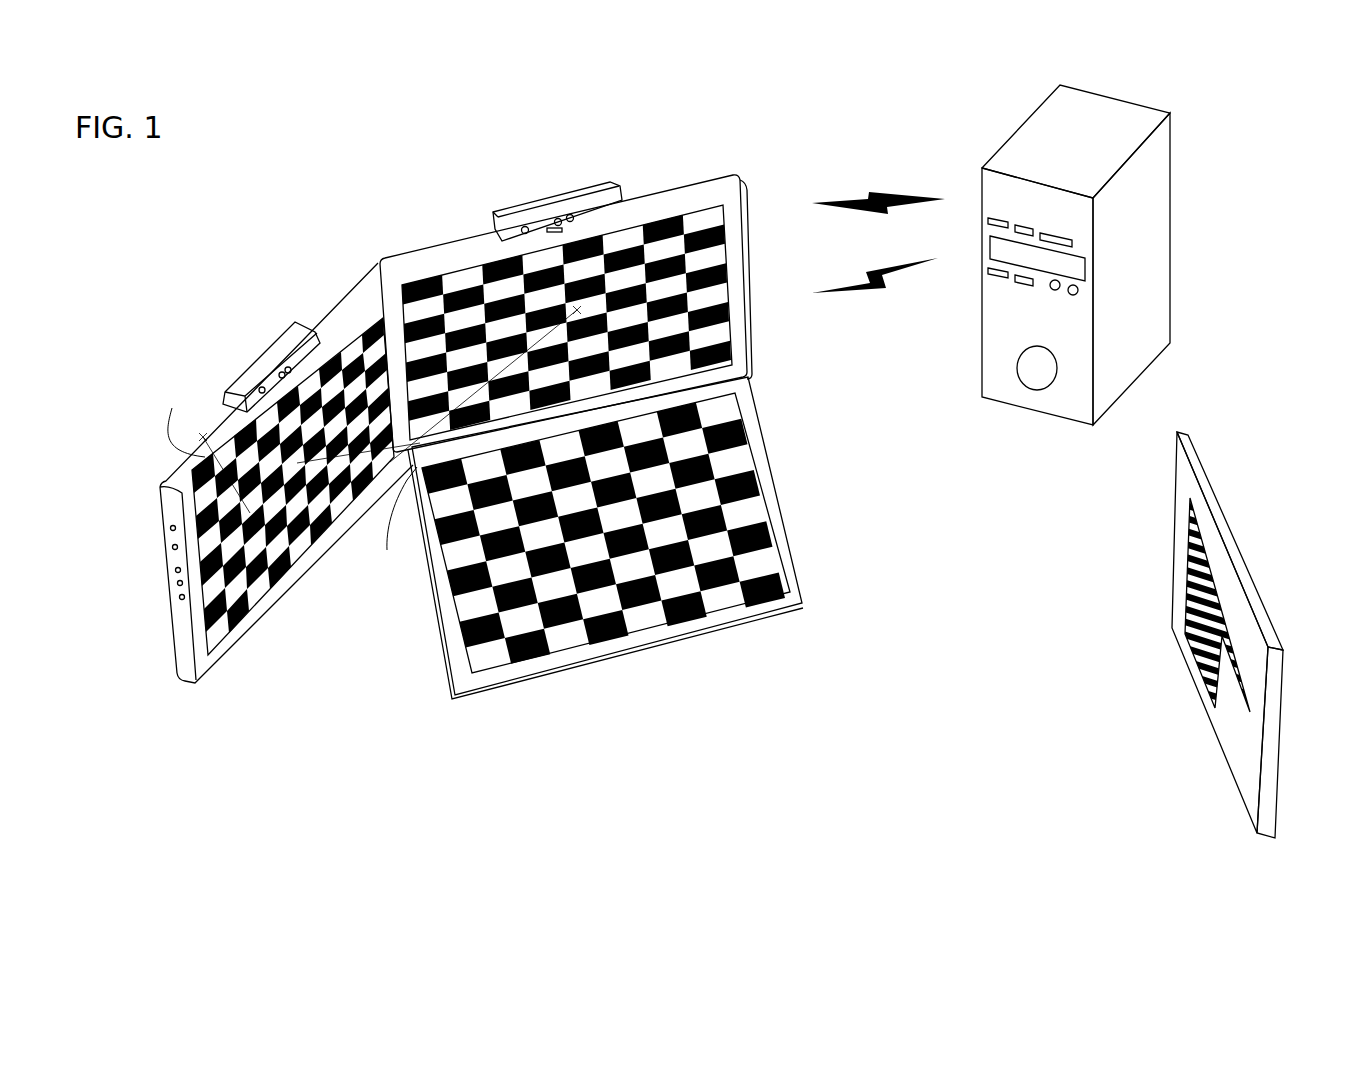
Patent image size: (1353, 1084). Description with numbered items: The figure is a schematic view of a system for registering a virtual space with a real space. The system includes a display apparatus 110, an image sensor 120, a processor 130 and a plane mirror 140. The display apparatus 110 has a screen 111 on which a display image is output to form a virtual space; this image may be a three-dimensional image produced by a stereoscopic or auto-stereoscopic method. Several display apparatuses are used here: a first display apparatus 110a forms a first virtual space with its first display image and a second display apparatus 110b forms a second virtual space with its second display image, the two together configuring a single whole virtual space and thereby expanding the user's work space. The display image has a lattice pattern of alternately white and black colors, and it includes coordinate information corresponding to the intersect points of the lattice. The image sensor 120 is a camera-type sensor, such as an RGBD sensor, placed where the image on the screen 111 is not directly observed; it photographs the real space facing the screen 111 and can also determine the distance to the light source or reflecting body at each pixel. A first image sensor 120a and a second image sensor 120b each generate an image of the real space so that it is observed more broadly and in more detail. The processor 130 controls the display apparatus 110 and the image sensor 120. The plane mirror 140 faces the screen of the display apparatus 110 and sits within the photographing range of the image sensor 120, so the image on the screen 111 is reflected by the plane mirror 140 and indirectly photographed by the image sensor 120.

The display apparatus 110 is at (425, 200).
The first display apparatus 110a is at (363, 305).
The second display apparatus 110b is at (413, 272).
The screen 111 is at (693, 180).
The image sensor 120 is at (465, 130).
The first image sensor 120a is at (282, 330).
The second image sensor 120b is at (495, 214).
The processor 130 is at (1163, 200).
The plane mirror 140 is at (1232, 742).